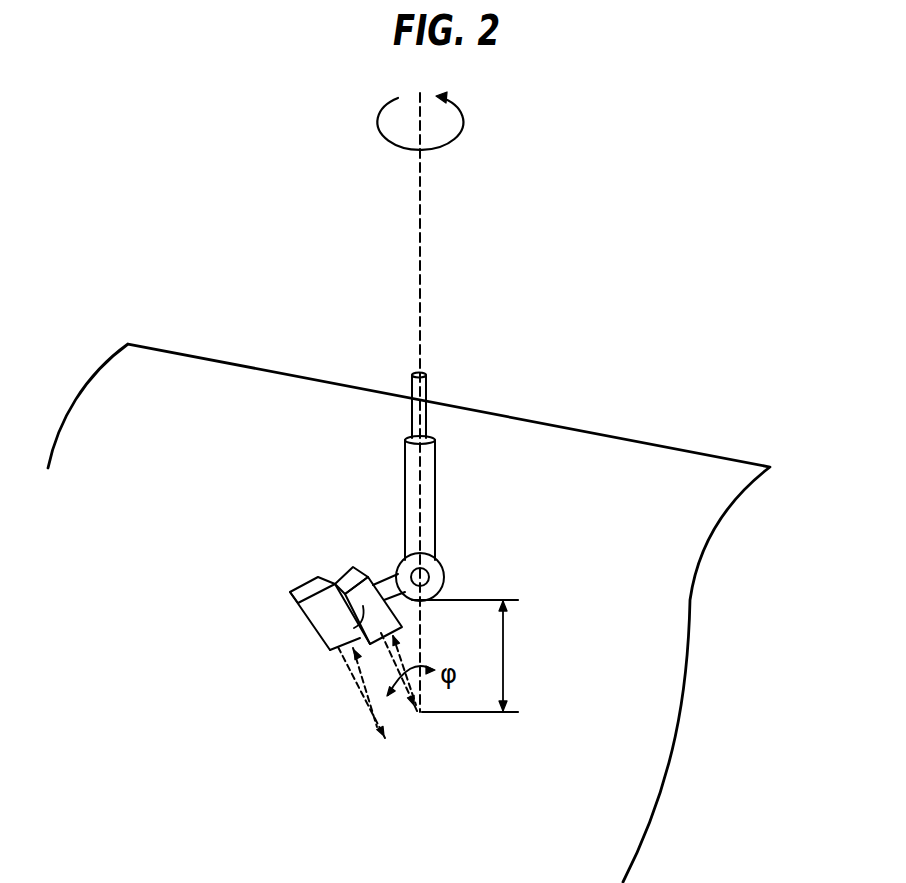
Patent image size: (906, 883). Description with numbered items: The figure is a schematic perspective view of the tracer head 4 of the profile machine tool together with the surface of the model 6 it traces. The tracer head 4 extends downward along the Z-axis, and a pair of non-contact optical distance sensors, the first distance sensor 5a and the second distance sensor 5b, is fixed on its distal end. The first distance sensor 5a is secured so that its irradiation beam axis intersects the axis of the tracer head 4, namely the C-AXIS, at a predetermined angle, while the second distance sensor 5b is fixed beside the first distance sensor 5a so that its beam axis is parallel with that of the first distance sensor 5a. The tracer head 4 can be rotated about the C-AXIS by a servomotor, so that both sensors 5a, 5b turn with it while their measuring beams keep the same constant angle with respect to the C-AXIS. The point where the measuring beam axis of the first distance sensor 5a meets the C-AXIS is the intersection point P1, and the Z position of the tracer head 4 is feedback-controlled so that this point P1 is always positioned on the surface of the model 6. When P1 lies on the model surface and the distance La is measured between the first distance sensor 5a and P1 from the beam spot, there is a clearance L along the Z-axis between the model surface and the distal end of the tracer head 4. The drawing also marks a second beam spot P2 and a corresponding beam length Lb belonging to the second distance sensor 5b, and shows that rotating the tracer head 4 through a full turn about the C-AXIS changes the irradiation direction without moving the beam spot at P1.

The tracer head 4 is at (435, 483).
The first distance sensor 5a is at (355, 626).
The second distance sensor 5b is at (297, 610).
The model 6 is at (593, 433).
The C-axis C-AXIS is at (420, 197).
The intersection point P1 is at (420, 713).
The laser spot position 2 P2 is at (387, 738).
The distance La is at (397, 668).
The laser beam b Lb is at (348, 670).
The clearance L is at (469, 656).